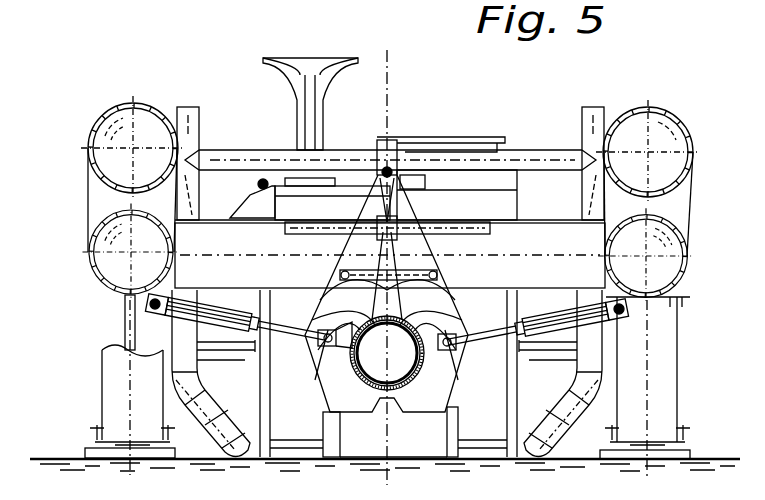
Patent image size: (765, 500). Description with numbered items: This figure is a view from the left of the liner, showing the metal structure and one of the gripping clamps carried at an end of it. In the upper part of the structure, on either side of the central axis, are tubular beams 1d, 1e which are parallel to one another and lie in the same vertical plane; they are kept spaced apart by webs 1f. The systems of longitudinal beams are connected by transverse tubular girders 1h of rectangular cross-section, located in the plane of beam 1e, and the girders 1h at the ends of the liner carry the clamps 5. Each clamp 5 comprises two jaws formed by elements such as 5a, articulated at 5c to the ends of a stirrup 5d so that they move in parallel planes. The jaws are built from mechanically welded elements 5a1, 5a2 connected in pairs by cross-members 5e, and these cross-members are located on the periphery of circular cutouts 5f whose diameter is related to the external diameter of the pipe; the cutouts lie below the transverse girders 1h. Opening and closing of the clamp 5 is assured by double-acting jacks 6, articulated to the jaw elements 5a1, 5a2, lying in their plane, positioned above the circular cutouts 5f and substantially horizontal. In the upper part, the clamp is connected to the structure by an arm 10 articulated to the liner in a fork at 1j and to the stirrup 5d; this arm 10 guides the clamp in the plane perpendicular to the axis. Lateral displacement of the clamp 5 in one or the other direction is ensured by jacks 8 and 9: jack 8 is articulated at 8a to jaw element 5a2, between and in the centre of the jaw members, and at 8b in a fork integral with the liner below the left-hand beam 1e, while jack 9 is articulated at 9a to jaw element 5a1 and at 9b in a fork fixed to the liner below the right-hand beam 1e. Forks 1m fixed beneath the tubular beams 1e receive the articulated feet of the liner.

The tubular beam 1d is at (108, 130).
The tubular beam 1e is at (110, 272).
The web 1f is at (100, 205).
The transverse tubular girder 1h is at (292, 284).
The fork 1j is at (262, 178).
The fork 1m is at (683, 305).
The clamp 5 is at (398, 428).
The jaw element 5a is at (452, 322).
The jaw element 5a1 is at (448, 372).
The jaw element 5a2 is at (350, 345).
The articulation 5c is at (393, 167).
The stirrup 5d is at (388, 165).
The cross-member 5e is at (387, 353).
The circular cutout 5f is at (418, 368).
The double-acting jack 6 is at (440, 278).
The jack 8 is at (215, 312).
The articulation 8a is at (318, 342).
The fork 8b is at (150, 312).
The jack 9 is at (555, 318).
The articulation 9a is at (456, 350).
The fork 9b is at (625, 318).
The arm 10 is at (296, 190).